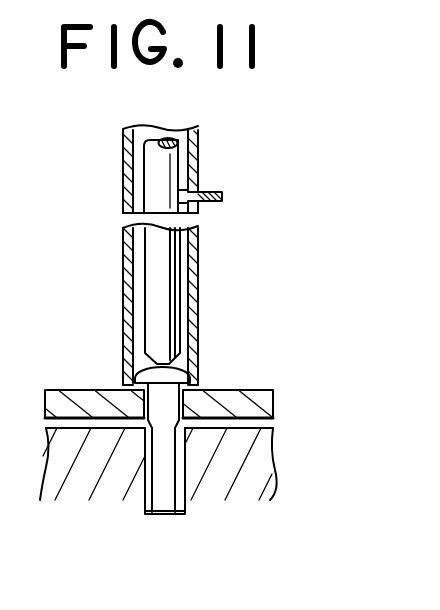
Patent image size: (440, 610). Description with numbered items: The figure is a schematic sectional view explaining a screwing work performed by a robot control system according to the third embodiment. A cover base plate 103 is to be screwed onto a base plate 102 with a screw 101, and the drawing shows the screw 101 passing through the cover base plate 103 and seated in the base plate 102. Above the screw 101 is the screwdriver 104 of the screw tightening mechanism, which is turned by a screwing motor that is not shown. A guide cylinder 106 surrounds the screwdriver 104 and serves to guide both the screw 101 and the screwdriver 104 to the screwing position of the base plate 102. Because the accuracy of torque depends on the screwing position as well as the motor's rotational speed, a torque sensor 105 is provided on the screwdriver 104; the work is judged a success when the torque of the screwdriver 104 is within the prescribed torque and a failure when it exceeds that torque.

The screw 101 is at (176, 377).
The base plate 102 is at (250, 440).
The cover base plate 103 is at (222, 390).
The screwdriver 104 is at (160, 256).
The torque sensor 105 is at (222, 197).
The guide cylinder 106 is at (200, 287).